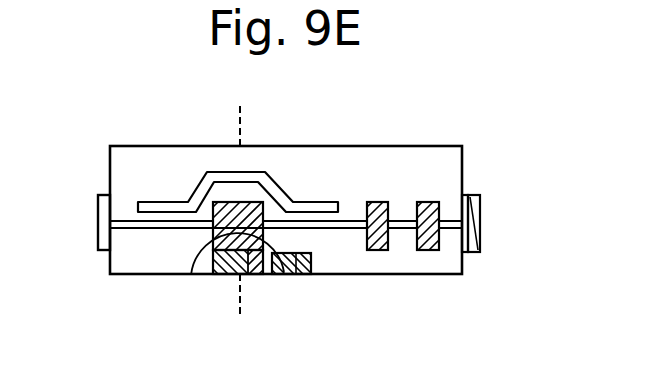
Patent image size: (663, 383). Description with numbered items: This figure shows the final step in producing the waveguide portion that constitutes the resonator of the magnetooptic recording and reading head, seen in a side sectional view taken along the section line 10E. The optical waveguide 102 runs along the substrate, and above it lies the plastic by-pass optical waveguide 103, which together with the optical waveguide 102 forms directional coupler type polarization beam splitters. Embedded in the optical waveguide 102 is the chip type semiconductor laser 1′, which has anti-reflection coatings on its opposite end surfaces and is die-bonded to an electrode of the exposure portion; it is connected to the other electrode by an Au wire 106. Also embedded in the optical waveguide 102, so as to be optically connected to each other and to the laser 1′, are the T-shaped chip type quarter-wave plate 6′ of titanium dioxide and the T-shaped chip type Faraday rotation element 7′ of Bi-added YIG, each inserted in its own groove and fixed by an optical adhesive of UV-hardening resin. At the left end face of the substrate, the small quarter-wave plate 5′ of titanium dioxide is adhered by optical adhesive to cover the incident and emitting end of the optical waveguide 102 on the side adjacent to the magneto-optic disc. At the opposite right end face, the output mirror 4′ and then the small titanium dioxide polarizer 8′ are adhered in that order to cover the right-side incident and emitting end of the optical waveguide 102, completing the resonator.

The section line 10E is at (245, 213).
The optical waveguide 102 is at (136, 228).
The by-pass optical waveguide 103 is at (262, 171).
The Au wire 106 is at (271, 274).
The semiconductor laser 1′ is at (191, 275).
The output mirror 4′ is at (470, 195).
The λ/4 plate 5′ is at (98, 241).
The chip type λ/4 plate 6′ is at (380, 250).
The chip type Faraday rotation element 7′ is at (431, 250).
The polarizer 8′ is at (478, 193).